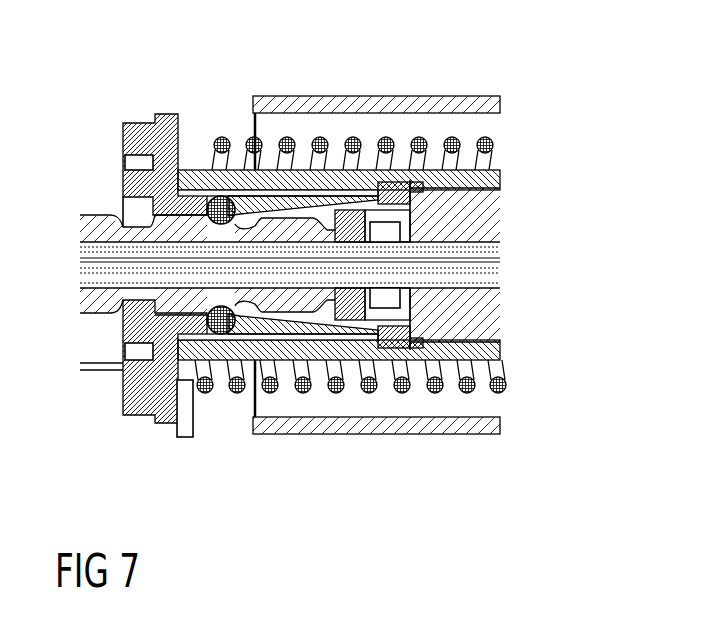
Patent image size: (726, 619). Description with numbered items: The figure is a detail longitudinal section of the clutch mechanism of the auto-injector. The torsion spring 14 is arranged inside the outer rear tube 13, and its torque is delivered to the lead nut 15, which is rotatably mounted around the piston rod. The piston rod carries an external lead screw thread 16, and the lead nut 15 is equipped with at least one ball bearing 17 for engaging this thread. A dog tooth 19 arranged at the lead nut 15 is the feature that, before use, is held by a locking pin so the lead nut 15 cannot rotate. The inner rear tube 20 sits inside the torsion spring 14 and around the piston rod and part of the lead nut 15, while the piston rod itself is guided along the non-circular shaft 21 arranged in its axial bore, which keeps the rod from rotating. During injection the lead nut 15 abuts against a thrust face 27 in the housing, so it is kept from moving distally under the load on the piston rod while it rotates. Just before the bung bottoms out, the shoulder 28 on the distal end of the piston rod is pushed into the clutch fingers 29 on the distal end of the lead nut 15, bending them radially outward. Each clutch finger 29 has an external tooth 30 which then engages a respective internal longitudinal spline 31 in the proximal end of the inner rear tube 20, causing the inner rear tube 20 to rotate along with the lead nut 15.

The outer rear tube 13 is at (275, 95).
The torsion spring 14 is at (493, 143).
The lead nut 15 is at (188, 328).
The lead screw thread 16 is at (123, 226).
The ball bearing 17 is at (213, 195).
The dog tooth 19 is at (162, 112).
The inner rear tube 20 is at (490, 178).
The shaft 21 is at (490, 262).
The thrust face 27 is at (183, 427).
The shoulder 28 is at (373, 177).
The clutch fingers 29 is at (362, 188).
The external tooth 30 is at (413, 192).
The internal longitudinal spline 31 is at (268, 188).